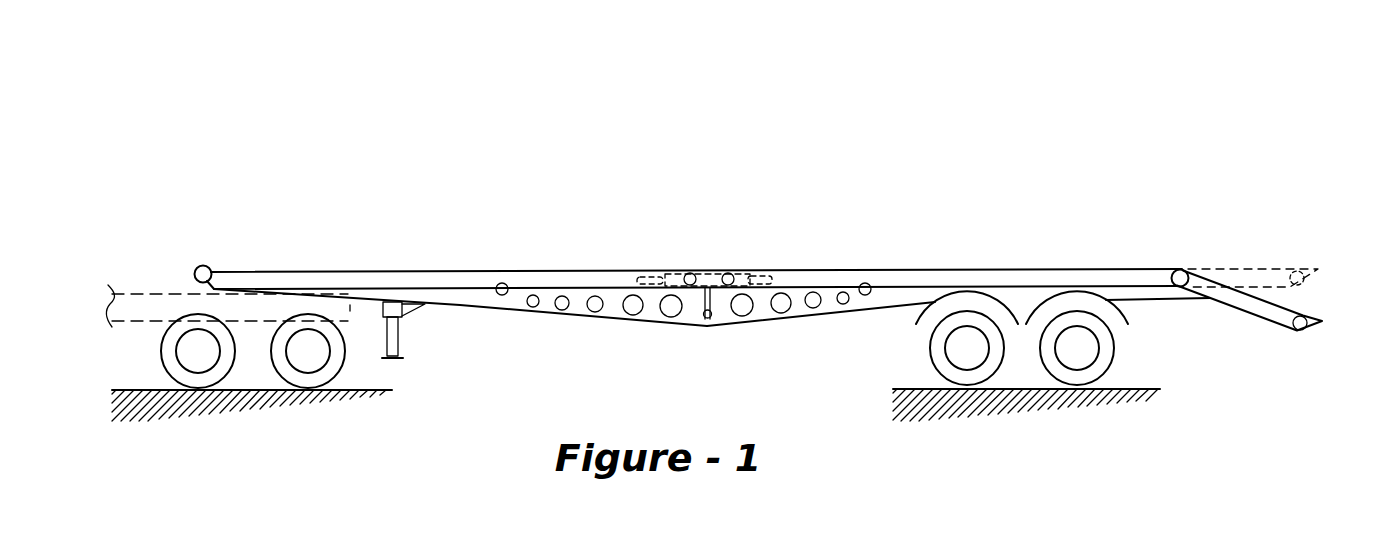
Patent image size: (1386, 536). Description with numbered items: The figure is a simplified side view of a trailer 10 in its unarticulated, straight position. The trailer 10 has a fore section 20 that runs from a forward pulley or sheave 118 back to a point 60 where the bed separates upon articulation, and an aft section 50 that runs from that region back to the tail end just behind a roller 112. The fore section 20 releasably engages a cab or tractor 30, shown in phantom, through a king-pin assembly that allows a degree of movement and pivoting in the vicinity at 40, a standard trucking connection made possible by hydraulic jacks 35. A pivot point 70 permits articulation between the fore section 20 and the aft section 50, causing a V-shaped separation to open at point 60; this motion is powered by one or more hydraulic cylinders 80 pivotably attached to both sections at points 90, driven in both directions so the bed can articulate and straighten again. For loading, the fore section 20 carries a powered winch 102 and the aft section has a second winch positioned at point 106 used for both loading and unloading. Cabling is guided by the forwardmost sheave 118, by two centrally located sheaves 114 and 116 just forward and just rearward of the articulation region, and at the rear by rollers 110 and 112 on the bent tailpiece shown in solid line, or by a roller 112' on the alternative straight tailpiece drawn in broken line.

The trailer 10 is at (958, 162).
The fore section 20 is at (458, 270).
The cab or tractor 30 is at (172, 295).
The hydraulic jacks 35 is at (403, 333).
The king-pin vicinity 40 is at (257, 290).
The aft section 50 is at (1012, 268).
The separation point 60 is at (705, 258).
The pivot point 70 is at (708, 326).
The hydraulic cylinders 80 is at (745, 275).
The attachment points 90 is at (640, 270).
The powered winch 102 is at (502, 282).
The second winch position 106 is at (867, 282).
The roller 110 is at (1177, 268).
The roller 112 is at (1249, 320).
The roller 112' is at (1253, 220).
The centrally located sheave 114 is at (690, 272).
The centrally located sheave 116 is at (730, 272).
The forward pulley or sheave 118 is at (206, 265).